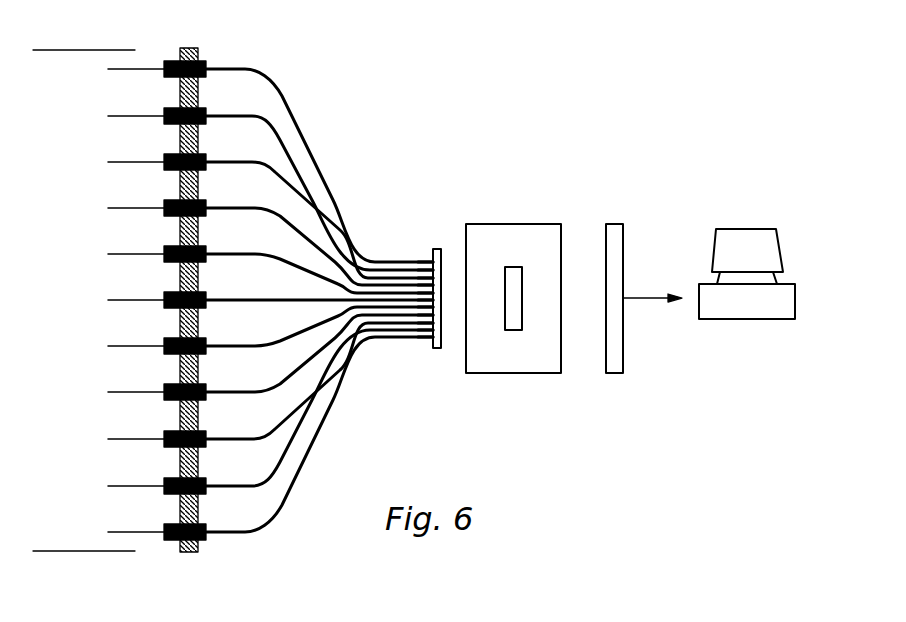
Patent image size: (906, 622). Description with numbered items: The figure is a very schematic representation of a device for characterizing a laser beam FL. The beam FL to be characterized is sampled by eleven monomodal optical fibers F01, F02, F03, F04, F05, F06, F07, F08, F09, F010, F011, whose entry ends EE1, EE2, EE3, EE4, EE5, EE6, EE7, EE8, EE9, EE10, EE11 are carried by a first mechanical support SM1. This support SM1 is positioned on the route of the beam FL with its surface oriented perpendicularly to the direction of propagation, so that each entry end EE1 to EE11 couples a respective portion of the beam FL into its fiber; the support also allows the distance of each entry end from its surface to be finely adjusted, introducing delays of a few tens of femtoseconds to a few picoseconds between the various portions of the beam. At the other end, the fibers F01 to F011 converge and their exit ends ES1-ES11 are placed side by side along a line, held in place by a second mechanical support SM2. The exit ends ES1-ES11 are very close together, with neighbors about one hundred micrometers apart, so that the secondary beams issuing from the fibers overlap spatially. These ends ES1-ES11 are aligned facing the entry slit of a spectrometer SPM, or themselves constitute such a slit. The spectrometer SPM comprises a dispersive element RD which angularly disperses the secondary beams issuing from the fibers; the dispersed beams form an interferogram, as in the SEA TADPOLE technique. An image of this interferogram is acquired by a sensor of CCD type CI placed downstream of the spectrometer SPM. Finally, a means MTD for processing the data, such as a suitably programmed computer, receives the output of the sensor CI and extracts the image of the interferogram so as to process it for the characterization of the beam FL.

The beam FL is at (47, 66).
The first mechanical support SM1 is at (191, 554).
The second mechanical support SM2 is at (437, 350).
The entry end EE1 is at (132, 69).
The entry end EE2 is at (132, 116).
The entry end EE3 is at (132, 162).
The entry end EE4 is at (132, 208).
The entry end EE5 is at (132, 254).
The entry end EE6 is at (132, 300).
The entry end EE7 is at (132, 346).
The entry end EE8 is at (132, 392).
The entry end EE9 is at (132, 439).
The entry end EE10 is at (125, 486).
The entry end EE11 is at (126, 532).
The monomodal optical fiber F01 is at (250, 68).
The monomodal optical fiber F02 is at (262, 117).
The monomodal optical fiber F03 is at (272, 171).
The monomodal optical fiber F04 is at (297, 228).
The monomodal optical fiber F05 is at (320, 270).
The monomodal optical fiber F06 is at (353, 298).
The monomodal optical fiber F07 is at (320, 328).
The monomodal optical fiber F08 is at (295, 373).
The monomodal optical fiber F09 is at (280, 428).
The monomodal optical fiber F010 is at (260, 485).
The monomodal optical fiber F011 is at (250, 535).
The exit ends ES1-ES11 is at (447, 258).
The spectrometer SPM is at (516, 224).
The dispersive element RD is at (512, 324).
The sensor of CCD type CI is at (612, 233).
The means for processing the data MTD is at (748, 229).